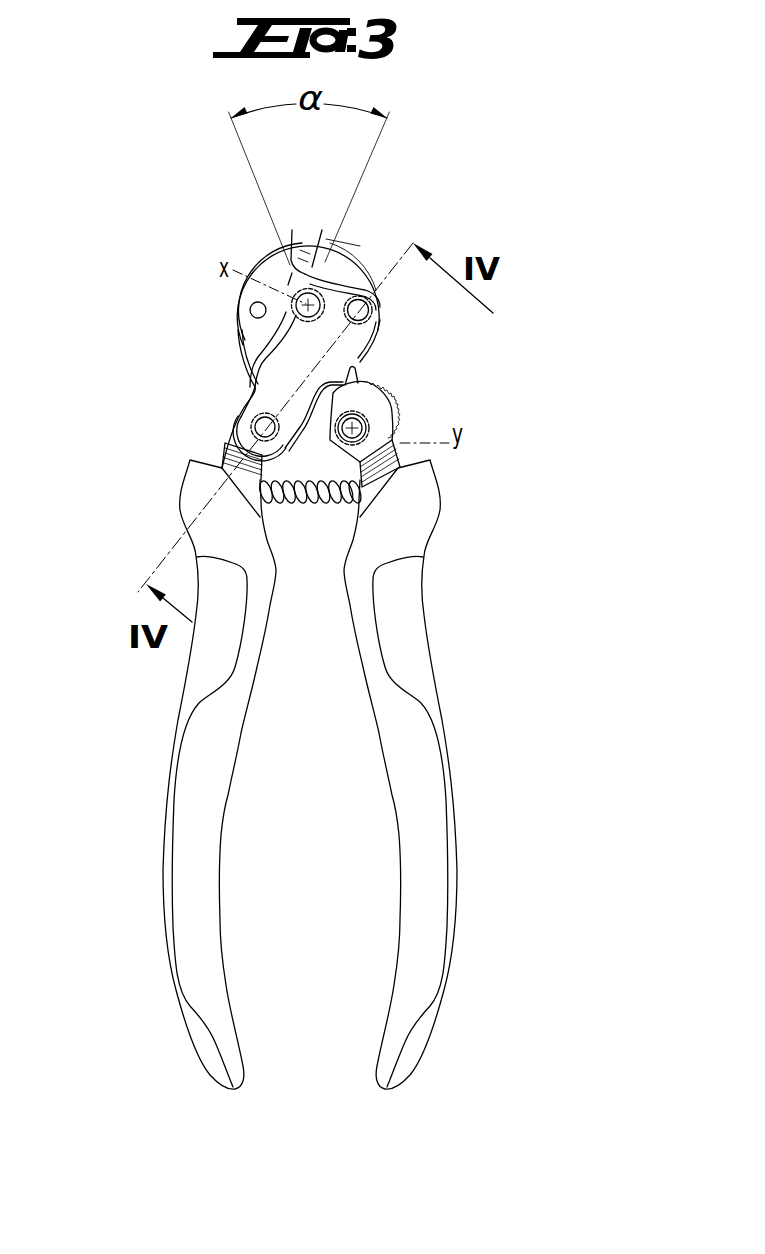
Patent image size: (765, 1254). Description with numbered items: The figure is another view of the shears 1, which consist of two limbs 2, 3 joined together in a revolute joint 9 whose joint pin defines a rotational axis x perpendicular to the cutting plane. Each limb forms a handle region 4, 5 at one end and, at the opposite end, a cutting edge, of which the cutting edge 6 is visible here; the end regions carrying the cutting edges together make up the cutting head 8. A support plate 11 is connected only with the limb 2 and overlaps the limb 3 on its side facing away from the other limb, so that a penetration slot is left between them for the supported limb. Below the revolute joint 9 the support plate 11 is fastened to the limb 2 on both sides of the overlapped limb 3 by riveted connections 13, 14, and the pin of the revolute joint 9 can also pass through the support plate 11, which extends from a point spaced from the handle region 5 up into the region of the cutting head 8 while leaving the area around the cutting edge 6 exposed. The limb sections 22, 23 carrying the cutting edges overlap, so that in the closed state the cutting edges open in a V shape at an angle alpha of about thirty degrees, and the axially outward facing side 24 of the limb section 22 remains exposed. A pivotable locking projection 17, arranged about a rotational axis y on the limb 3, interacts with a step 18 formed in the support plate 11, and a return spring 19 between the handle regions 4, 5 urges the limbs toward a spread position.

The shears 1 is at (169, 236).
The limb 2 is at (134, 822).
The limb 3 is at (482, 822).
The handle region 4 is at (427, 948).
The handle region 5 is at (190, 948).
The cutting edge 6 is at (309, 245).
The cutting head 8 is at (346, 227).
The revolute joint 9 is at (288, 282).
The support plate 11 is at (300, 343).
The connection 13 is at (256, 425).
The connection 14 is at (368, 311).
The locking projection 17 is at (337, 395).
The step 18 is at (357, 370).
The return spring 19 is at (301, 505).
The limb section 22 is at (260, 330).
The limb section 23 is at (343, 258).
The side 24 is at (303, 247).